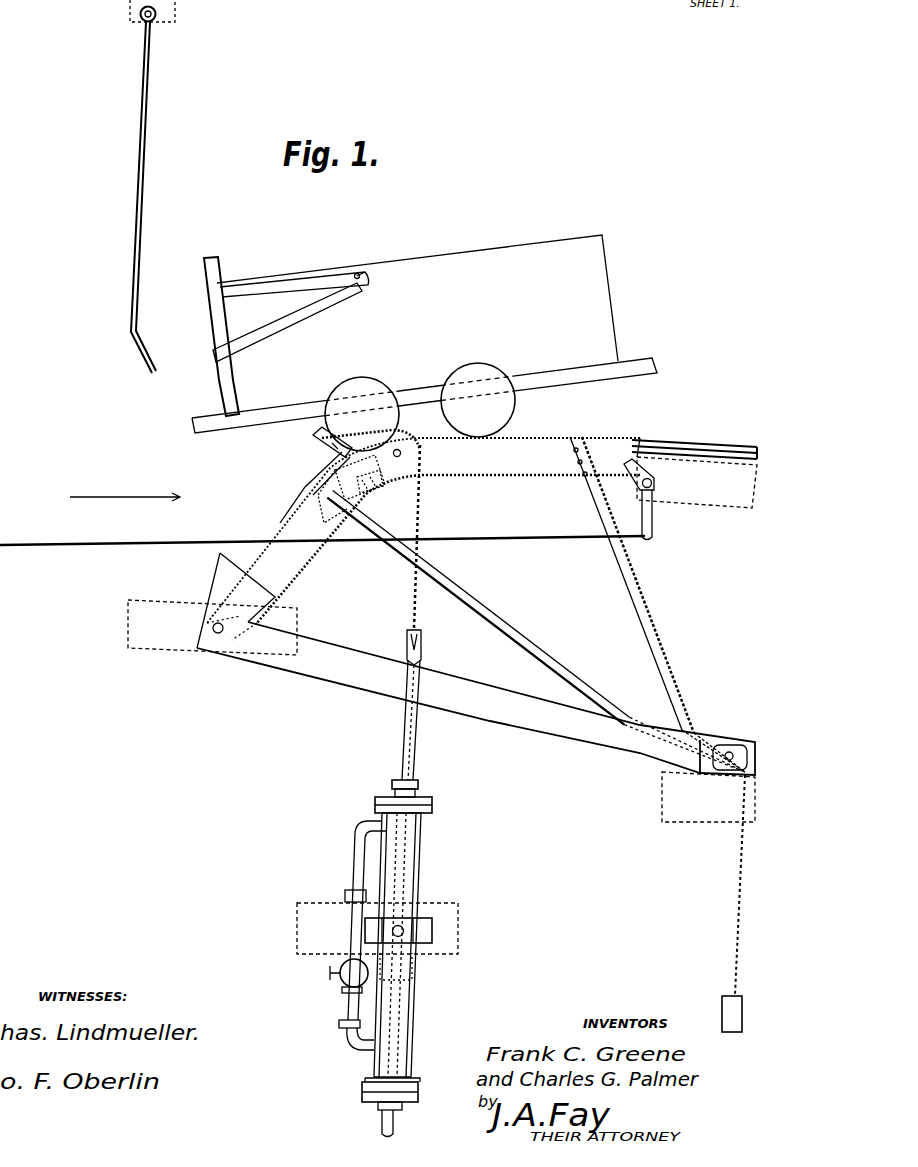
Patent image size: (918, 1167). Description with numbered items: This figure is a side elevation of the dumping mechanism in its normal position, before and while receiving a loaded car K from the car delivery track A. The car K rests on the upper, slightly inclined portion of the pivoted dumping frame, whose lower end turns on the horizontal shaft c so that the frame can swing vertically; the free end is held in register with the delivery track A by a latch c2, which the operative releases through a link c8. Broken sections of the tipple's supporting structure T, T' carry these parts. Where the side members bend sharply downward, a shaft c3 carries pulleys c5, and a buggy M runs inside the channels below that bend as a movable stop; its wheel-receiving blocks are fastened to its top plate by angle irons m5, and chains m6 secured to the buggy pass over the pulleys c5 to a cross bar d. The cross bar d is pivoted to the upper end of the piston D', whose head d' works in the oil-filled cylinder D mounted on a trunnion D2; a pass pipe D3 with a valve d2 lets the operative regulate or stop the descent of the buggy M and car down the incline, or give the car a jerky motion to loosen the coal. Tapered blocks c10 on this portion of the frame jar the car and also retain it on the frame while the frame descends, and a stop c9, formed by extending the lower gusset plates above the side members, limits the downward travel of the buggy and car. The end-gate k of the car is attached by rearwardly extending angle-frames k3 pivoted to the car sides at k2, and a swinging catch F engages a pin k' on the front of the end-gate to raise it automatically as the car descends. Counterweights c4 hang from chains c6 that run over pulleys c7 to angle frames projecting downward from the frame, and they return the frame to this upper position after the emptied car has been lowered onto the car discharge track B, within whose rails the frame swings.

The swinging catch F is at (138, 225).
The supporting structure T is at (442, 411).
The car K is at (417, 298).
The end-gate k is at (207, 336).
The pin k' is at (269, 284).
The pivot k2 is at (362, 283).
The angle-frames k3 is at (270, 316).
The horizontal shaft c is at (423, 530).
The pulleys c5 is at (408, 434).
The shaft c3 is at (401, 453).
The buggy M is at (312, 445).
The angle irons m5 is at (328, 456).
The tapered blocks c10 is at (318, 498).
The chains m6 is at (417, 500).
The car delivery track A is at (690, 447).
The latch c2 is at (636, 480).
The link c8 is at (105, 543).
The stop c9 is at (218, 574).
The car discharge track B is at (476, 698).
The pulleys c7 is at (735, 742).
The chains c6 is at (740, 842).
The counterweights c4 is at (722, 1000).
The cross bar d is at (428, 643).
The piston D' is at (395, 720).
The cylinder D is at (412, 958).
The trunnion D2 is at (402, 928).
The tie T' is at (377, 928).
The piston head d' is at (414, 971).
The pass pipe D3 is at (352, 860).
The valve d2 is at (340, 982).